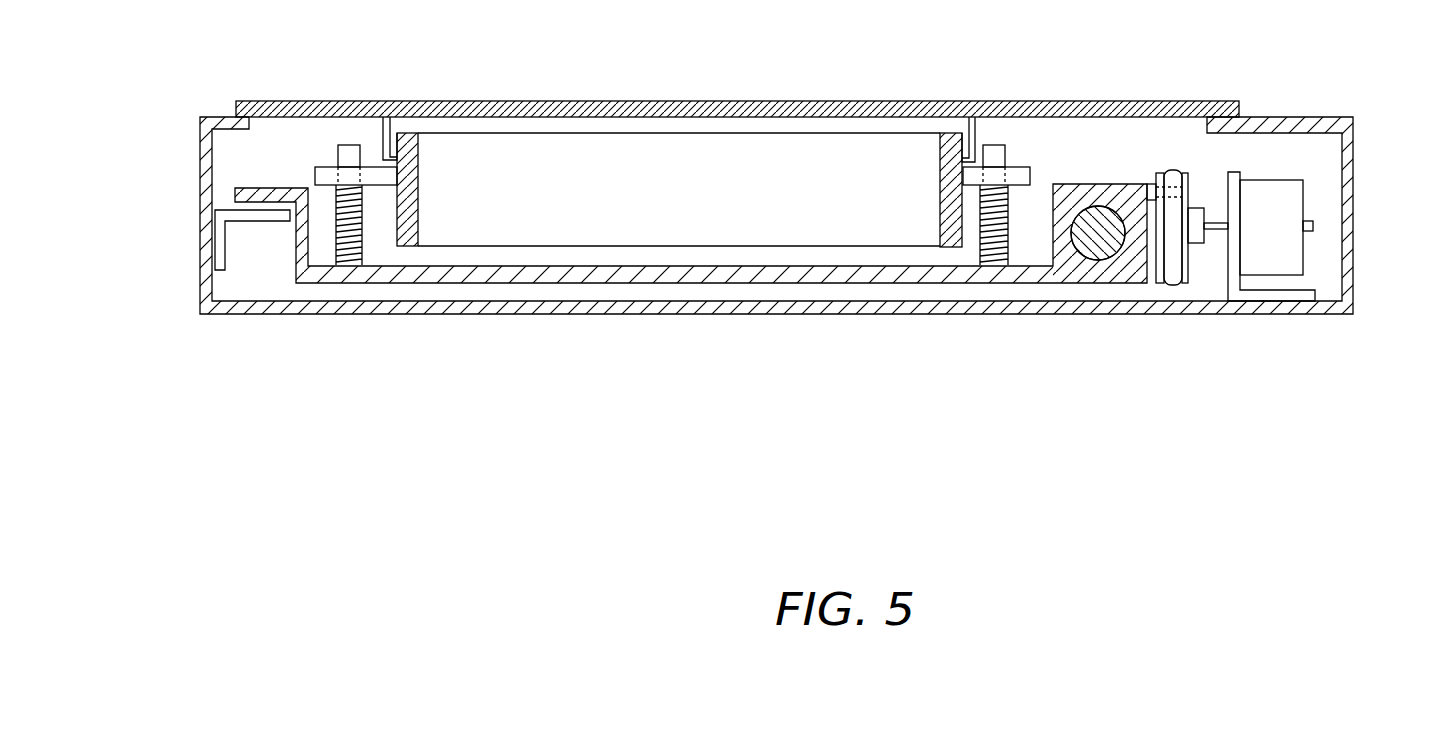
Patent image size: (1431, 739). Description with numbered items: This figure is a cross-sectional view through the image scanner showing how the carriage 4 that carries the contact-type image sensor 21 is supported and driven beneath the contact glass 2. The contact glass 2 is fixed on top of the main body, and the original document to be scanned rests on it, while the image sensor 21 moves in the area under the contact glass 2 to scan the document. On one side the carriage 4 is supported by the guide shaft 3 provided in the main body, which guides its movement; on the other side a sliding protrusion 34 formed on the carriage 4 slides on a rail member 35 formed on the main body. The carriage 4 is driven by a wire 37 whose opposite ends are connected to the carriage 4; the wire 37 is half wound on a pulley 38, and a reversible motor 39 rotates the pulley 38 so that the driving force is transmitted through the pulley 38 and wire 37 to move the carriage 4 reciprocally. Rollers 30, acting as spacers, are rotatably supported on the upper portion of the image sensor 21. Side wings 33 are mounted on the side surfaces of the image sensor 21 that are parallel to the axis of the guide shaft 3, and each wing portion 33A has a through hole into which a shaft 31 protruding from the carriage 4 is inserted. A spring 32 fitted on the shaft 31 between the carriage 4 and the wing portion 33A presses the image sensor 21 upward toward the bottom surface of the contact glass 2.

The contact glass 2 is at (741, 101).
The guide shaft 3 is at (1097, 250).
The carriage 4 is at (505, 283).
The contact-type image sensor 21 is at (562, 145).
The rollers 30 is at (388, 118).
The shaft 31 is at (350, 145).
The spring 32 is at (363, 200).
The side wings 33 is at (408, 246).
The wing portion 33A is at (325, 172).
The sliding protrusion 34 is at (235, 192).
The rail member 35 is at (215, 250).
The wire 37 is at (1167, 283).
The pulley 38 is at (1162, 170).
The reversible motor 39 is at (1300, 249).